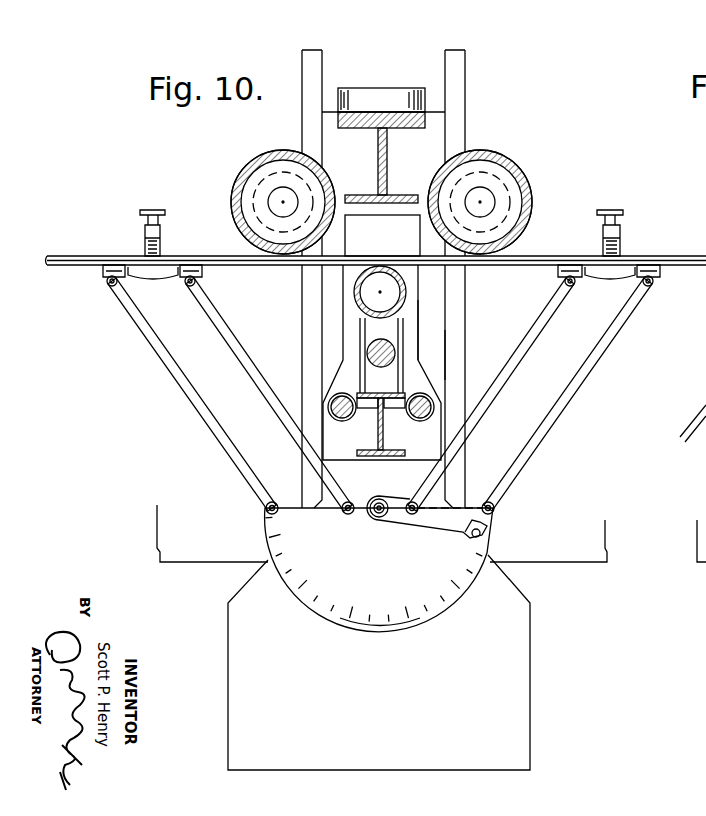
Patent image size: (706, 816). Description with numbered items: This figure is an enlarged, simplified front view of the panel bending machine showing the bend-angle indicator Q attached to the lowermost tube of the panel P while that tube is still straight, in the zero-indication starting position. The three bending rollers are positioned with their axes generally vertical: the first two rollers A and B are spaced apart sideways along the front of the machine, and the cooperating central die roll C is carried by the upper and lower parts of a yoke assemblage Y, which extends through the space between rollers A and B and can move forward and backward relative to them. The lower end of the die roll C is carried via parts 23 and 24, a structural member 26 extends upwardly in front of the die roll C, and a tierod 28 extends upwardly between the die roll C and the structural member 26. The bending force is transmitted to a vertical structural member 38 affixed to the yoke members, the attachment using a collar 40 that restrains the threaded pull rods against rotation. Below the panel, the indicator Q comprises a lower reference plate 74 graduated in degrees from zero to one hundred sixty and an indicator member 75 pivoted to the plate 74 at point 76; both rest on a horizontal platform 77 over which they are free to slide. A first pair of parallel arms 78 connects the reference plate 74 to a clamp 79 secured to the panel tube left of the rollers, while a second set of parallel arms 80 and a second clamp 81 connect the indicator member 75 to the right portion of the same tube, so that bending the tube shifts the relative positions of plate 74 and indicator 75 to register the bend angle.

The collar 40 is at (370, 88).
The vertical structural member 38 is at (366, 128).
The yoke assemblage Y is at (272, 297).
The first roller A is at (234, 181).
The second roller B is at (527, 177).
The panel P is at (78, 256).
The central die roll C is at (408, 290).
The part 24 is at (421, 331).
The part 23 is at (433, 361).
The tierod 28 is at (349, 353).
The structural member 26 is at (384, 432).
The pivot point 76 is at (379, 500).
The indicator member 75 is at (430, 531).
The lower reference plate 74 is at (305, 600).
The bend-angle indicator Q is at (372, 623).
The horizontal platform 77 is at (228, 690).
The first pair of parallel arms 78 is at (228, 428).
The clamp 79 is at (151, 277).
The second set of parallel arms 80 is at (519, 370).
The second clamp 81 is at (608, 285).